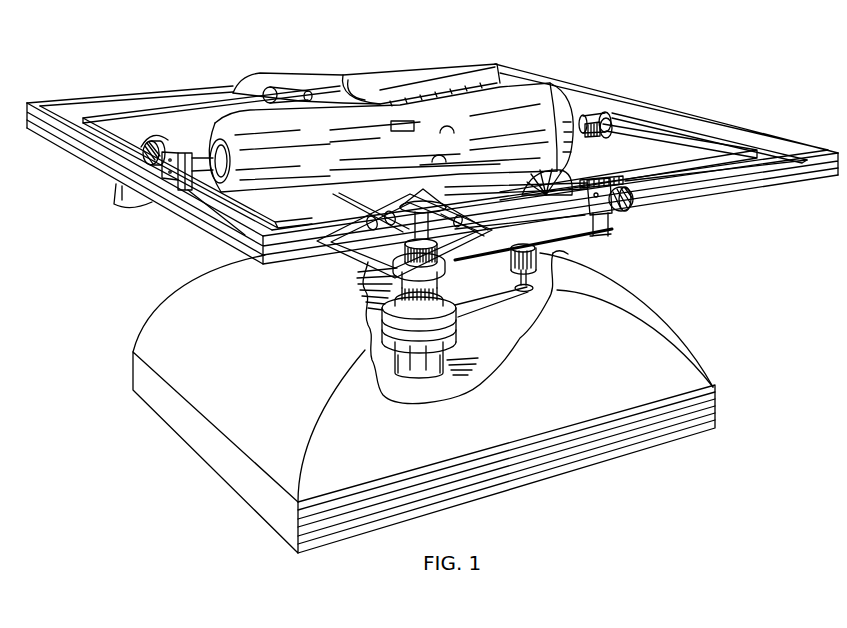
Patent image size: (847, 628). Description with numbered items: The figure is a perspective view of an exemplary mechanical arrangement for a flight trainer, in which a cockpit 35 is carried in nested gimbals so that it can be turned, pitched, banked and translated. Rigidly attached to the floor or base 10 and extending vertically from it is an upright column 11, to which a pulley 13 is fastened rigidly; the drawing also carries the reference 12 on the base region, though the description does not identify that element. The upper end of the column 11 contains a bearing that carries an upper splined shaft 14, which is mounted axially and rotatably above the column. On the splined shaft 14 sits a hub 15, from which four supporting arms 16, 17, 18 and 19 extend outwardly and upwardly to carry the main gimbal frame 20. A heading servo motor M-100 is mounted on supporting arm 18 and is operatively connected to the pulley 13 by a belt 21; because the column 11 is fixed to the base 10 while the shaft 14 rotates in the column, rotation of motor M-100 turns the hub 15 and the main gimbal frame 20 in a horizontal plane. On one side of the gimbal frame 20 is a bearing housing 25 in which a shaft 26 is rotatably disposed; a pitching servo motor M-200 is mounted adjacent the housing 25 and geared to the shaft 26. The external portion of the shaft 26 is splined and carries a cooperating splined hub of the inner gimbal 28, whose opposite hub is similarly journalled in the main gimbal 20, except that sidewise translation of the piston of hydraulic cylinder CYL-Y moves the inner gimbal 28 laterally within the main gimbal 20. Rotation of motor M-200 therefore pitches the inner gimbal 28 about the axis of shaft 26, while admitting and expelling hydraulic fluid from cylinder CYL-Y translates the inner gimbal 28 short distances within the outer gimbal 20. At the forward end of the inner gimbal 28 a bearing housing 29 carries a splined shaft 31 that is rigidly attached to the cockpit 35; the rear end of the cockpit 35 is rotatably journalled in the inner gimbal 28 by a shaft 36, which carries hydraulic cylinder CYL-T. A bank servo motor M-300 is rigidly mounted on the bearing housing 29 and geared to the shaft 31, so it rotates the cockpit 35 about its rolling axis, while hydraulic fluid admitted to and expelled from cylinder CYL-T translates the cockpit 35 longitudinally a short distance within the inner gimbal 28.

The floor or base 10 is at (500, 355).
The upright column 11 is at (392, 388).
The base 12 is at (256, 371).
The pulley 13 is at (367, 335).
The upper splined shaft 14 is at (476, 216).
The hub 15 is at (419, 247).
The supporting arm 16 is at (347, 257).
The supporting arm 17 is at (222, 247).
The supporting arm 18 is at (650, 152).
The supporting arm 19 is at (548, 250).
The main gimbal frame 20 is at (82, 100).
The belt 21 is at (485, 320).
The bearing housing 25 is at (612, 218).
The shaft 26 is at (572, 180).
The inner gimbal 28 is at (195, 112).
The bearing housing 29 is at (142, 150).
The splined shaft 31 is at (206, 158).
The cockpit 35 is at (346, 151).
The shaft 36 is at (613, 135).
The hydraulic cylinder CYL-Y is at (327, 52).
The hydraulic cylinder CYL-T is at (598, 112).
The heading servo motor M-100 is at (556, 272).
The pitching servo motor M-200 is at (633, 207).
The bank servo motor M-300 is at (145, 180).